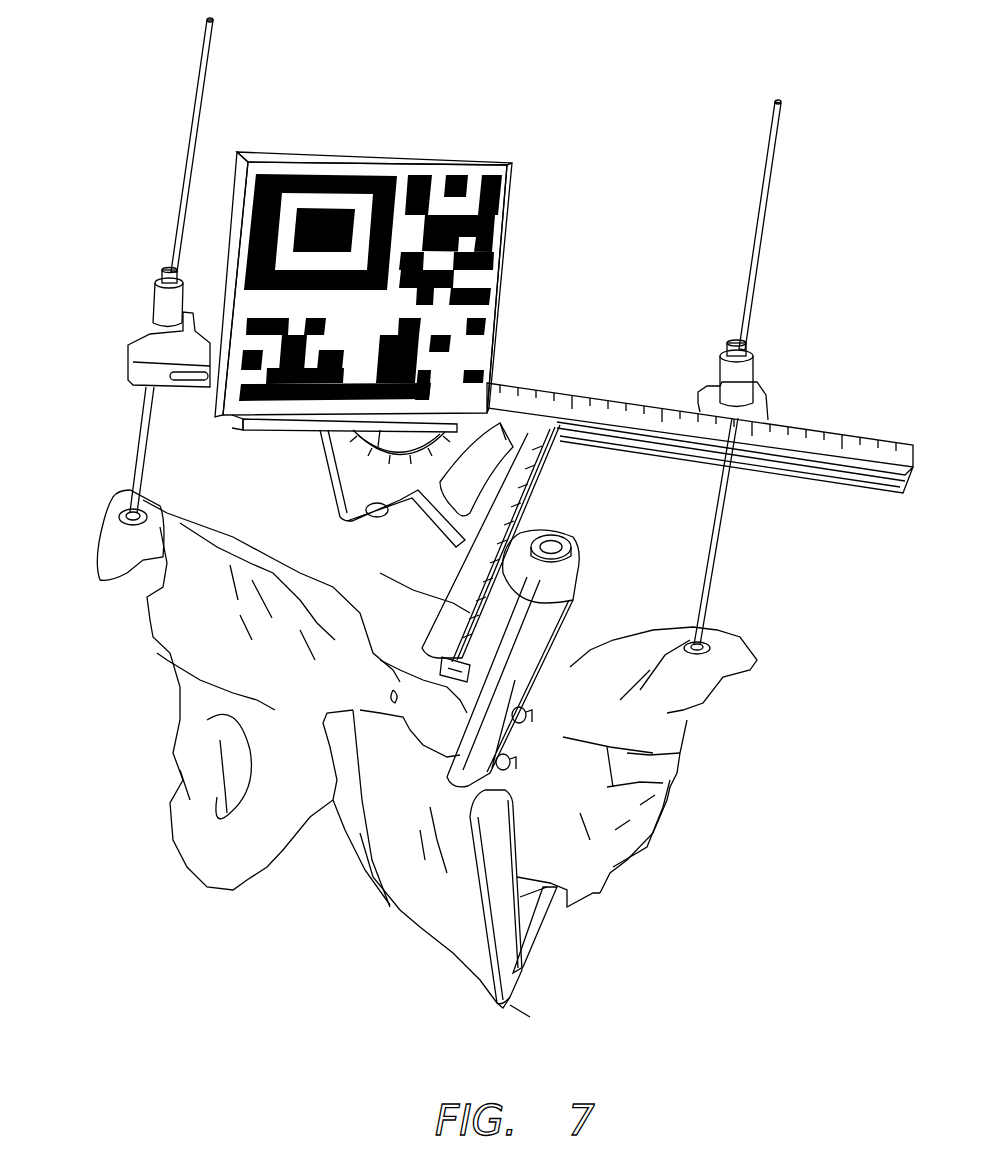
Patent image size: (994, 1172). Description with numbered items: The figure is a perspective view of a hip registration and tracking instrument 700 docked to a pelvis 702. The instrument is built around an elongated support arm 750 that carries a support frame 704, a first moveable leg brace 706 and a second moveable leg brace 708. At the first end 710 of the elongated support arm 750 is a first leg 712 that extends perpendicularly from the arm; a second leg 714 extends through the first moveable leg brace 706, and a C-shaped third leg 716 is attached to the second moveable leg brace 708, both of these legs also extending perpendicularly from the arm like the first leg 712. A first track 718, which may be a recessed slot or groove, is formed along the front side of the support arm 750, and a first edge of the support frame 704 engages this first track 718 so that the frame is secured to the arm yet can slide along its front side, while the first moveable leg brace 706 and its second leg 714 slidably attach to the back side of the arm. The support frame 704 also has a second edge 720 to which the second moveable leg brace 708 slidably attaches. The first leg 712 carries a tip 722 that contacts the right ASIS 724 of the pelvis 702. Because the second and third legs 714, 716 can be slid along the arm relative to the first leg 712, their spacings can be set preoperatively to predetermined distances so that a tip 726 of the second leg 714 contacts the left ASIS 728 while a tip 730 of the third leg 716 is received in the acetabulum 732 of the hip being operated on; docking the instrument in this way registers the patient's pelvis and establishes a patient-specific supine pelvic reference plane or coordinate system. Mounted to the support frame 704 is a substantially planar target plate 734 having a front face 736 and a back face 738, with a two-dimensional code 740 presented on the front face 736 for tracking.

The hip registration and tracking instrument 700 is at (658, 88).
The pelvis 702 is at (680, 778).
The support frame 704 is at (338, 466).
The first moveable leg brace 706 is at (770, 385).
The second moveable leg brace 708 is at (580, 540).
The first end 710 is at (130, 336).
The first leg 712 is at (138, 446).
The second leg 714 is at (735, 535).
The third leg 716 is at (510, 990).
The first track 718 is at (818, 466).
The second edge 720 is at (548, 473).
The tip 722 is at (125, 515).
The right ASIS 724 is at (130, 555).
The tip 726 is at (690, 642).
The left ASIS 728 is at (760, 680).
The tip 730 is at (560, 887).
The acetabulum 732 is at (610, 855).
The target plate 734 is at (395, 142).
The front face 736 is at (500, 166).
The back face 738 is at (282, 150).
The two-dimensional code 740 is at (382, 320).
The elongated support arm 750 is at (520, 385).